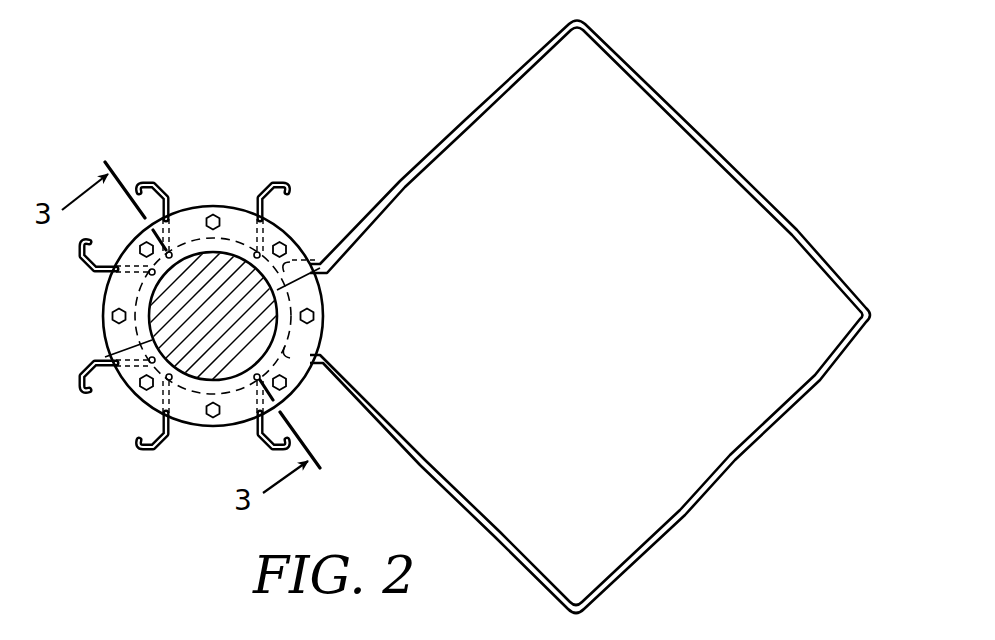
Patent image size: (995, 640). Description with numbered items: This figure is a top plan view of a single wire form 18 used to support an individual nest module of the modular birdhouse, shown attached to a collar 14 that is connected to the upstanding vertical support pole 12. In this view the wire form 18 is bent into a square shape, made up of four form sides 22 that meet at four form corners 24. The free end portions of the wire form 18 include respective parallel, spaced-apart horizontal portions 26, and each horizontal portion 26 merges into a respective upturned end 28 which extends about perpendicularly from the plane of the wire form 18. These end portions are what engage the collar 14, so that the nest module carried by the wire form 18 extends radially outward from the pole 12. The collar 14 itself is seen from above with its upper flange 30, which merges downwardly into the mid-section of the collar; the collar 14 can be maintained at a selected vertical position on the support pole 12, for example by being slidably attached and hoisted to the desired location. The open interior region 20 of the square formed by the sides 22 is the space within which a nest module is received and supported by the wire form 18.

The support pole 12 is at (185, 292).
The collar 14 is at (199, 203).
The wire form 18 is at (714, 137).
The interior opening of frame 20 is at (737, 259).
The form sides 22 is at (494, 92).
The form corners 24 is at (577, 27).
The horizontal portions 26 is at (302, 246).
The upturned ends 28 is at (292, 352).
The upper flange 30 is at (243, 206).